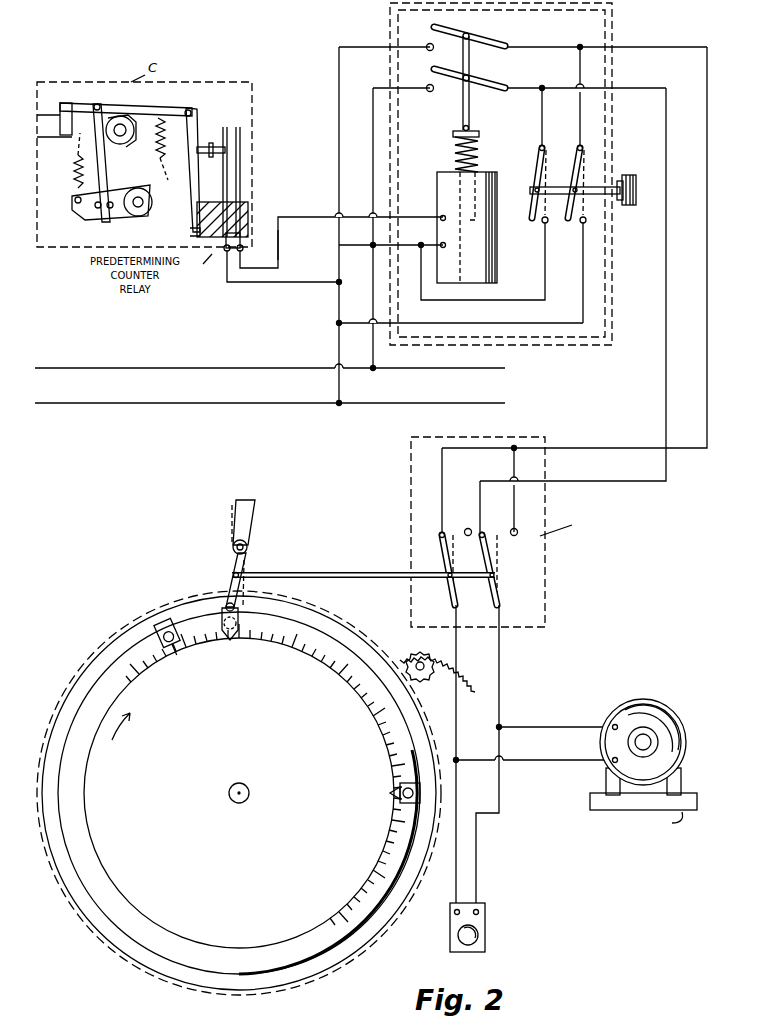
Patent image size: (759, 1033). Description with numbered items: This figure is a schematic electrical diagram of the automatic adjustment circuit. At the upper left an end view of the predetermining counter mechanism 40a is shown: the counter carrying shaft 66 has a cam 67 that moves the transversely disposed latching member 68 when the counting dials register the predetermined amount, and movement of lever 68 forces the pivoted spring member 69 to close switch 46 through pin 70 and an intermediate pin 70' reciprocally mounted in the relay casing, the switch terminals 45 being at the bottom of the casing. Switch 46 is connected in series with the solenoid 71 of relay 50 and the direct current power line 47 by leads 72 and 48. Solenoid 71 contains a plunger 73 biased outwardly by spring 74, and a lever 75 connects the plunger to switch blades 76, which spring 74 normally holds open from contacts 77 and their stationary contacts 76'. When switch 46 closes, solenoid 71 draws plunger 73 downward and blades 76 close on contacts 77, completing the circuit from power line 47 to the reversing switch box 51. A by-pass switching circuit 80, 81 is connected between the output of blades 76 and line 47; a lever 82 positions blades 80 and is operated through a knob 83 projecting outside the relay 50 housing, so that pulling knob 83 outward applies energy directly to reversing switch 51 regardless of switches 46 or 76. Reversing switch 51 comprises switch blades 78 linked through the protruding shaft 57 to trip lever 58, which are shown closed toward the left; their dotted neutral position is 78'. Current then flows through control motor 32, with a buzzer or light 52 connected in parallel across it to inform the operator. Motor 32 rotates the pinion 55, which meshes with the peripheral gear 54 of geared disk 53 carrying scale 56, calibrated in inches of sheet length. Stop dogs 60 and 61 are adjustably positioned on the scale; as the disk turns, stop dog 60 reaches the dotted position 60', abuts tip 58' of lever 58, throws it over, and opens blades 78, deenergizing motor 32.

The control motor 32 is at (672, 724).
The counter mechanism 40a is at (45, 247).
The contacts 45 is at (238, 252).
The switch 46 is at (248, 169).
The direct current power line 47 is at (42, 401).
The lead 48 is at (373, 350).
The relay 50 is at (583, 345).
The reversing switch box 51 is at (545, 615).
The buzzer or light 52 is at (480, 914).
The geared disk 53 is at (362, 948).
The peripheral gear 54 is at (426, 707).
The pinion 55 is at (428, 646).
The scale 56 is at (282, 935).
The protruding shaft 57 is at (340, 576).
The trip lever 58 is at (258, 527).
The tip of trip lever 58' is at (215, 582).
The stop dog 60 is at (146, 631).
The dotted position of stop dog 60' is at (245, 624).
The stop dog 61 is at (412, 803).
The counter carrying shaft 66 is at (121, 145).
The cam 67 is at (158, 135).
The latching member 68 is at (155, 110).
The spring member 69 is at (196, 120).
The pin 70 is at (211, 161).
The intermediate pin 70' is at (231, 169).
The solenoid 71 is at (488, 250).
The lead 72 is at (292, 282).
The plunger 73 is at (462, 186).
The spring 74 is at (480, 150).
The lever 75 is at (470, 110).
The switch blades 76 is at (469, 48).
The contacts 76' is at (427, 70).
The contacts 77 is at (430, 85).
The switch blades 78 is at (469, 569).
The neutral or open position 78' is at (495, 554).
The switch blades 80 is at (574, 168).
The by-pass switch contacts 81 is at (581, 223).
The lever 82 is at (593, 187).
The knob 83 is at (626, 205).